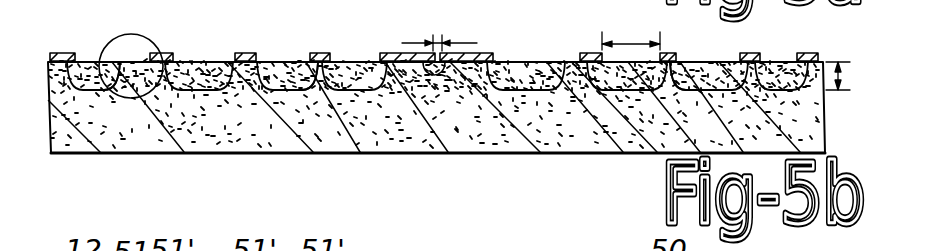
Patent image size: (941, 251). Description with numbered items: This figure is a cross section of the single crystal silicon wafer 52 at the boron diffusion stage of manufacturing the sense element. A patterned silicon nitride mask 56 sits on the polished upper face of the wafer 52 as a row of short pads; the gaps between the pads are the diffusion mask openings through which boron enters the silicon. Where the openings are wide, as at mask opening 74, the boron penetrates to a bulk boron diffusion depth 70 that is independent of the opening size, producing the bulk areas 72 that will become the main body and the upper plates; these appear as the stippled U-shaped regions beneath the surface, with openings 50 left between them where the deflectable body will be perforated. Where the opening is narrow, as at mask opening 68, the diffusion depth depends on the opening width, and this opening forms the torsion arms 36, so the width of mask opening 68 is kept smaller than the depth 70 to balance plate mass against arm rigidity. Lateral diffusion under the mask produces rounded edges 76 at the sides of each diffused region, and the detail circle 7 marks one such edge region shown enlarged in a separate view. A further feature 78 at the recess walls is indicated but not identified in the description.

The detail circle 7 is at (114, 37).
The torsion arms 36 is at (426, 73).
The openings 50 is at (243, 72).
The single crystal silicon wafer 52 is at (812, 135).
The silicon nitride mask 56 is at (62, 54).
The mask opening 68 is at (434, 32).
The boron diffusion depth 70 is at (841, 78).
The bulk areas 72 is at (522, 61).
The mask opening 74 is at (628, 44).
The rounded edges 76 is at (135, 72).
The recess wall coating 78 is at (296, 66).